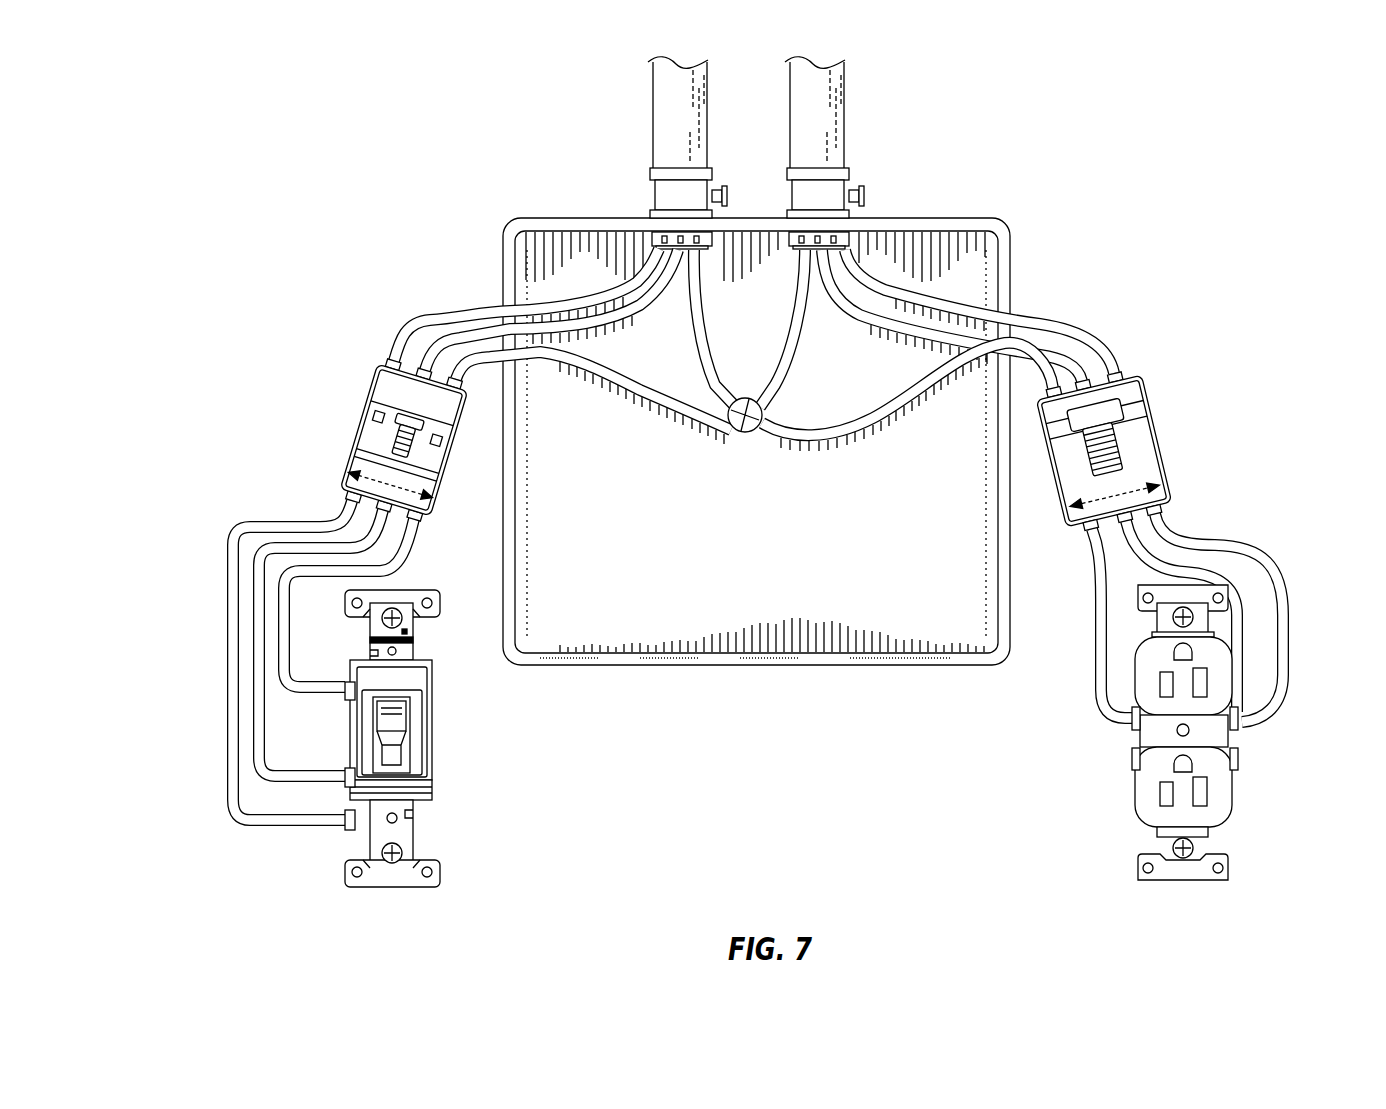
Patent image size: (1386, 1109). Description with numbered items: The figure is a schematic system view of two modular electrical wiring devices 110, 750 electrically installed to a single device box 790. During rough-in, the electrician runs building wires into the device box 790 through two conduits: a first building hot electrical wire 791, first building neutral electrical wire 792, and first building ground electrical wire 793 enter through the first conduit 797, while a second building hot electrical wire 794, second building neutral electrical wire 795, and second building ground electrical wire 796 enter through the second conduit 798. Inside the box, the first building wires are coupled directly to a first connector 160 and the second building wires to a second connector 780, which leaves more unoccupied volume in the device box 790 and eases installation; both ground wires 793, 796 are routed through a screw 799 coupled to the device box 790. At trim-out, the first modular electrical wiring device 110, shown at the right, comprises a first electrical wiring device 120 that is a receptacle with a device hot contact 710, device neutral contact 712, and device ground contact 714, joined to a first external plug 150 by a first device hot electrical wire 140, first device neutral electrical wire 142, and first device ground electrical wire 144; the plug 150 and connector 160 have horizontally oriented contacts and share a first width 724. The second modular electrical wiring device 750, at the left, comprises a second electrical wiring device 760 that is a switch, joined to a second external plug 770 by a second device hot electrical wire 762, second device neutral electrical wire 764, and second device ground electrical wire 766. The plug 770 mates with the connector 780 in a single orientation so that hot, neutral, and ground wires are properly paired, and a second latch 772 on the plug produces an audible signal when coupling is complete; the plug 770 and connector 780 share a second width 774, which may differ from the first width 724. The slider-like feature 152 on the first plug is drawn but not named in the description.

The first modular electrical wiring device 110 is at (1202, 692).
The first electrical wiring device 120 is at (1232, 760).
The first device hot electrical wire 140 is at (1095, 602).
The first device neutral electrical wire 142 is at (1288, 605).
The first device ground electrical wire 144 is at (1200, 560).
The first external plug 150 is at (1145, 488).
The slider 152 is at (1108, 450).
The first connector 160 is at (1129, 468).
The device hot contact 710 is at (1130, 728).
The device neutral contact 712 is at (1235, 730).
The device ground contact 714 is at (1233, 653).
The first width 724 is at (1100, 540).
The second modular electrical wiring device 750 is at (302, 728).
The second electrical wiring device 760 is at (420, 718).
The second device hot electrical wire 762 is at (420, 545).
The second device neutral electrical wire 764 is at (250, 745).
The second device ground electrical wire 766 is at (228, 700).
The second external plug 770 is at (355, 478).
The second latch 772 is at (380, 430).
The second width 774 is at (415, 480).
The second connector 780 is at (382, 434).
The device box 790 is at (956, 273).
The first building hot electrical wire 791 is at (869, 343).
The first building neutral electrical wire 792 is at (1118, 340).
The first building ground electrical wire 793 is at (1057, 333).
The second building hot electrical wire 794 is at (544, 370).
The second building neutral electrical wire 795 is at (480, 330).
The second building ground electrical wire 796 is at (415, 318).
The first conduit 797 is at (835, 121).
The second conduit 798 is at (660, 121).
The screw 799 is at (750, 434).